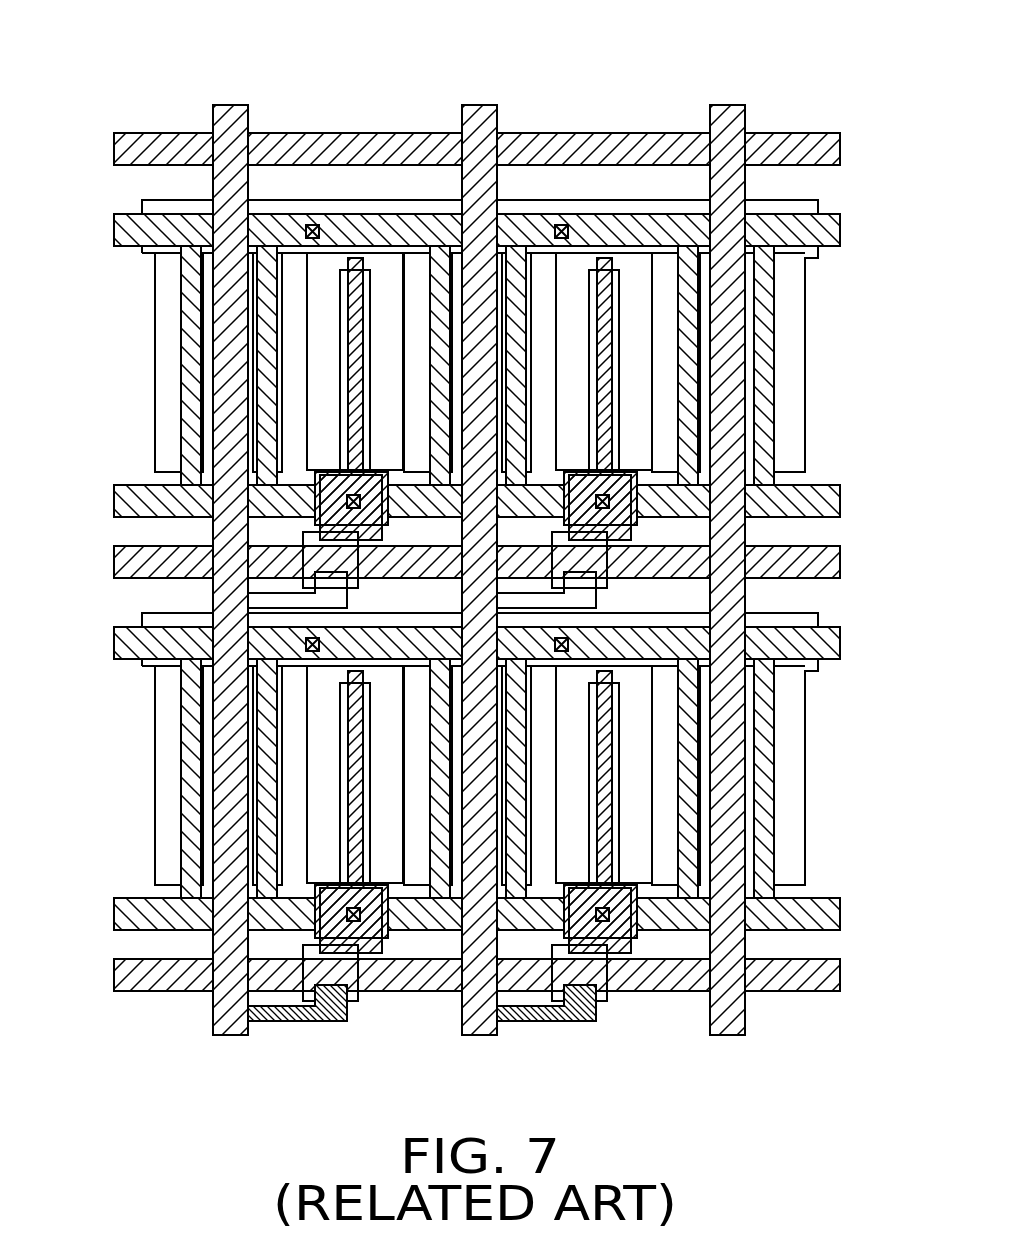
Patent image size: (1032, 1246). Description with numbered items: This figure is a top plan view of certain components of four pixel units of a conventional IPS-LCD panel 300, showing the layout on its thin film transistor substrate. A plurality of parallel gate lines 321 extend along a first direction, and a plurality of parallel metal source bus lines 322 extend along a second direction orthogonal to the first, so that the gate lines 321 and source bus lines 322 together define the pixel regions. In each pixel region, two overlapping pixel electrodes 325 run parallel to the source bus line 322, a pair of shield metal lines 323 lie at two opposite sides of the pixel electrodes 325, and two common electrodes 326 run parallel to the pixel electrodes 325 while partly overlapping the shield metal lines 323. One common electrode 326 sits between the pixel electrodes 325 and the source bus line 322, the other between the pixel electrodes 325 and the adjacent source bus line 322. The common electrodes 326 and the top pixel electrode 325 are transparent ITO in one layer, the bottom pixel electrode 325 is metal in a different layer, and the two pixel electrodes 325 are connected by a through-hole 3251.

The IPS-LCD panel 300 is at (461, 62).
The gate line 321 is at (130, 552).
The source bus line 322 is at (225, 1002).
The shield metal line 323 is at (272, 893).
The pixel electrode 325 is at (353, 802).
The common electrode 326 is at (423, 865).
The through-hole 3251 is at (355, 922).